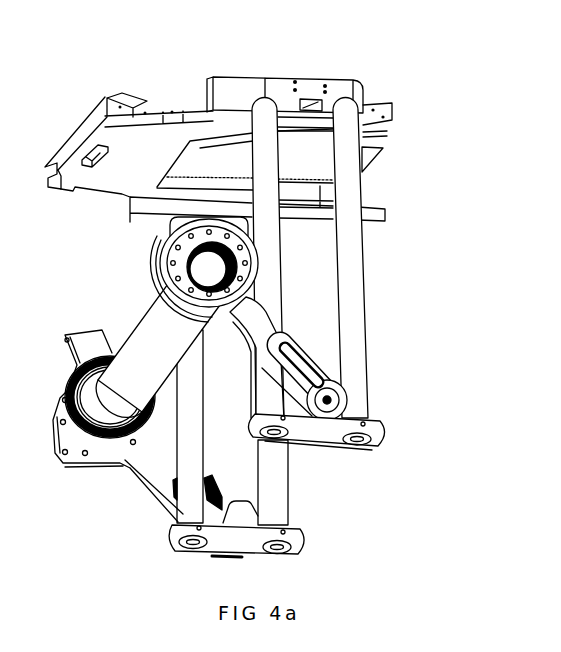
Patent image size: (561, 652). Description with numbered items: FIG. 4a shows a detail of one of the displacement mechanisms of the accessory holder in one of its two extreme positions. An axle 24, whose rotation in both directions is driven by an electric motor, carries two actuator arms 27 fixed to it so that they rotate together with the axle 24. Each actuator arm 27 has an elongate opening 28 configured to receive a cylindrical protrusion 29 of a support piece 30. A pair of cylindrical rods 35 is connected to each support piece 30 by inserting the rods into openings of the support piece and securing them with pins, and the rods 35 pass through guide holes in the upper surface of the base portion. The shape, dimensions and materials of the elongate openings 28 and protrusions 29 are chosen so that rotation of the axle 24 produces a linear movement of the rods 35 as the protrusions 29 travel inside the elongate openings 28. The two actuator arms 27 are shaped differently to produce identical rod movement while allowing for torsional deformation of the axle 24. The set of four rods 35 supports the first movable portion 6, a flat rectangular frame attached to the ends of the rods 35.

The first movable portion 6 is at (246, 90).
The axle 24 is at (148, 342).
The actuator arm 27 is at (258, 328).
The elongate opening 28 is at (302, 371).
The cylindrical protrusion 29 is at (346, 403).
The support piece 30 is at (362, 446).
The cylindrical rod 35 is at (270, 272).